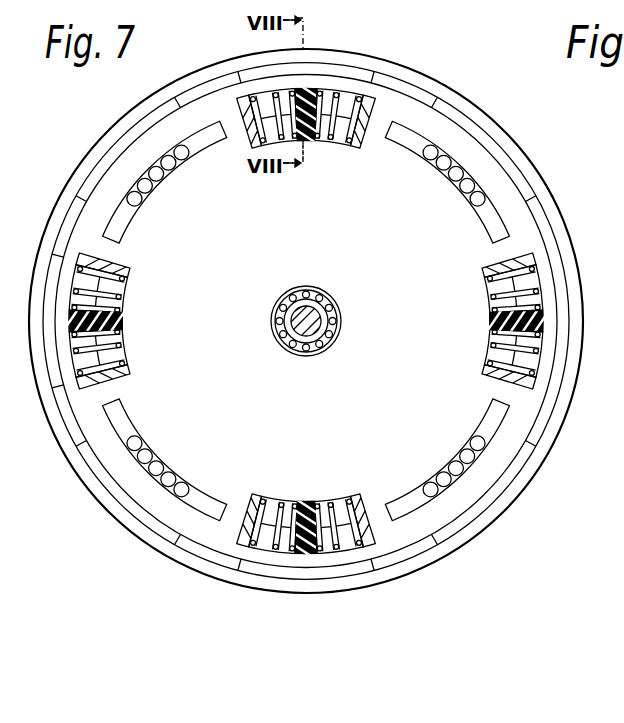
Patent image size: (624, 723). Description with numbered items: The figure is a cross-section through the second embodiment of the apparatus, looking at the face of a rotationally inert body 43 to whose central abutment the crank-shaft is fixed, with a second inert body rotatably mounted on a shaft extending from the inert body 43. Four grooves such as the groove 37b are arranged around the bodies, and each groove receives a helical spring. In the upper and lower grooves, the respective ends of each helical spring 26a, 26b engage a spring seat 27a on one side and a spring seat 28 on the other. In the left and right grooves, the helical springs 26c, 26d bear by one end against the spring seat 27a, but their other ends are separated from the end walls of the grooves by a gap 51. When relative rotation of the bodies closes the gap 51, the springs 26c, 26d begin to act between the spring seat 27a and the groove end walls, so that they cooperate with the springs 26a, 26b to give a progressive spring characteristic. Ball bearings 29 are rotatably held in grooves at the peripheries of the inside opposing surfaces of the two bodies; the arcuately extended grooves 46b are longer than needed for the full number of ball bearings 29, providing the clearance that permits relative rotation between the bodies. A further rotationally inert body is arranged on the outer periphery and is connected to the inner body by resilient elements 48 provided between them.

The resilient elements 48 is at (258, 80).
The groove 37b is at (257, 97).
The spring seat 28 is at (243, 140).
The spring seat 27a is at (307, 140).
The arcuately extended grooves 46b is at (422, 140).
The ball bearings 29 is at (143, 452).
The rotationally inert body 43 is at (300, 312).
The gap 51 is at (490, 263).
The helical spring 26a is at (347, 542).
The helical spring 26b is at (270, 542).
The helical spring 26c is at (498, 302).
The helical spring 26d is at (533, 355).